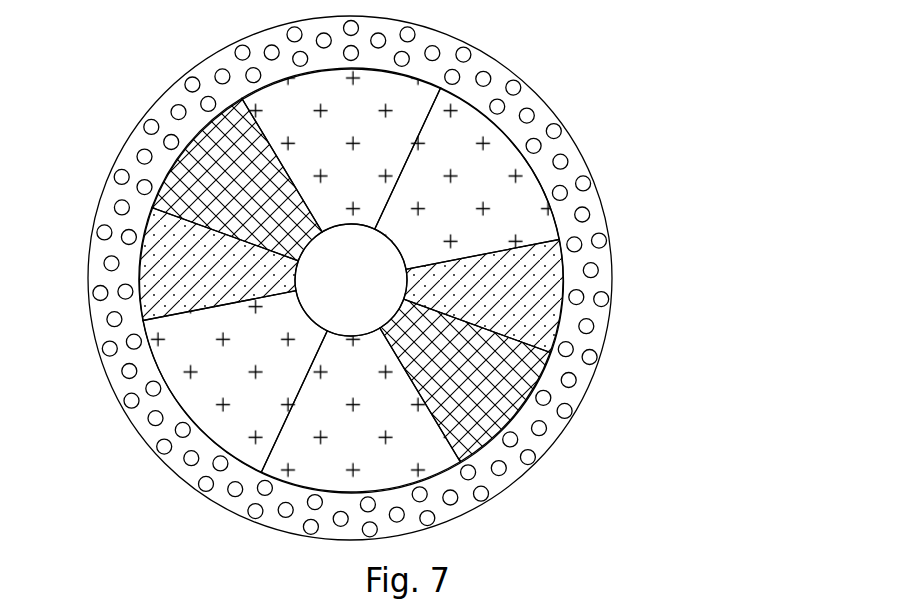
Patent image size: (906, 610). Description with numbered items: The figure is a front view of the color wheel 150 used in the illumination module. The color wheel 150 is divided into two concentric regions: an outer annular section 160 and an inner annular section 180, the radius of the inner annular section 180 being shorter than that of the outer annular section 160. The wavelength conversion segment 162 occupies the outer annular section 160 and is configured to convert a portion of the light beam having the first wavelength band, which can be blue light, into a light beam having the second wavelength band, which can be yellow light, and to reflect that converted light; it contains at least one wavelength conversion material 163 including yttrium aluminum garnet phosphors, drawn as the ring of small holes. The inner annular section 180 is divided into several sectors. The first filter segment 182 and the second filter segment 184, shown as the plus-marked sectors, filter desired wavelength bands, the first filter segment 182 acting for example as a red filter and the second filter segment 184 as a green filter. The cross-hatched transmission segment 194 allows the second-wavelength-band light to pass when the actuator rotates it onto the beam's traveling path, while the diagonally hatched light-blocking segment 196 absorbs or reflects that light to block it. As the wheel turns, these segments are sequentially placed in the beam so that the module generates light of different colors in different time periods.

The color wheel 150 is at (399, 271).
The outer annular section 160 is at (583, 200).
The wavelength conversion segment 162 is at (560, 148).
The wavelength conversion material 163 is at (531, 111).
The inner annular section 180 is at (455, 280).
The first filter segment 182 is at (370, 127).
The second filter segment 184 is at (473, 217).
The transmission segment 194 is at (258, 206).
The light-blocking segment 196 is at (225, 281).